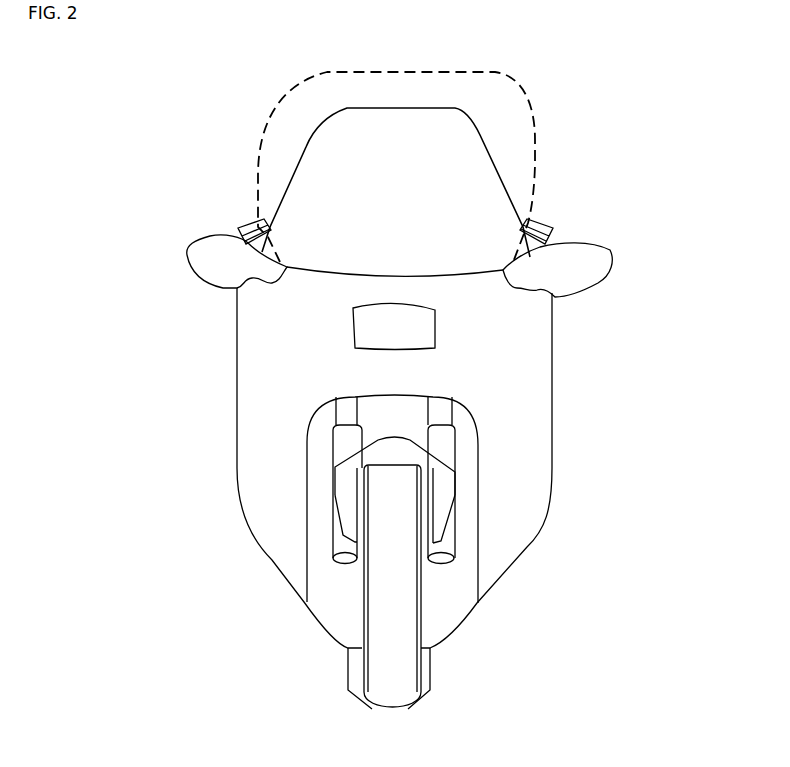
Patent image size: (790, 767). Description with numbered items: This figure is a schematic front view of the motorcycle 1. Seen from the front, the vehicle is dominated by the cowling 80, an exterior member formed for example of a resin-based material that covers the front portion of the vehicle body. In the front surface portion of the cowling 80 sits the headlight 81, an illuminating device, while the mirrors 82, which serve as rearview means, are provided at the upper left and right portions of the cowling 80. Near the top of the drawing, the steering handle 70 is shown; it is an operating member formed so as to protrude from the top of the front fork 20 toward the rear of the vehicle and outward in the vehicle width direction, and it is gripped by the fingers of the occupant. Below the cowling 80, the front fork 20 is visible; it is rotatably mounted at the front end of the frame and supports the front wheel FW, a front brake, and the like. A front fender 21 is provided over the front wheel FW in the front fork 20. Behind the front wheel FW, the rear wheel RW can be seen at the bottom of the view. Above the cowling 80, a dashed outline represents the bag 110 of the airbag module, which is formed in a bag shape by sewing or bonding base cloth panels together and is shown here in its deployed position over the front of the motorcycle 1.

The motorcycle 1 is at (136, 146).
The front fork 20 is at (331, 448).
The front fender 21 is at (334, 482).
The steering handle 70 is at (247, 222).
The cowling 80 is at (236, 371).
The headlight 81 is at (352, 335).
The mirrors 82 is at (186, 252).
The bag 110 is at (538, 139).
The front wheel FW is at (361, 660).
The rear wheel RW is at (347, 672).